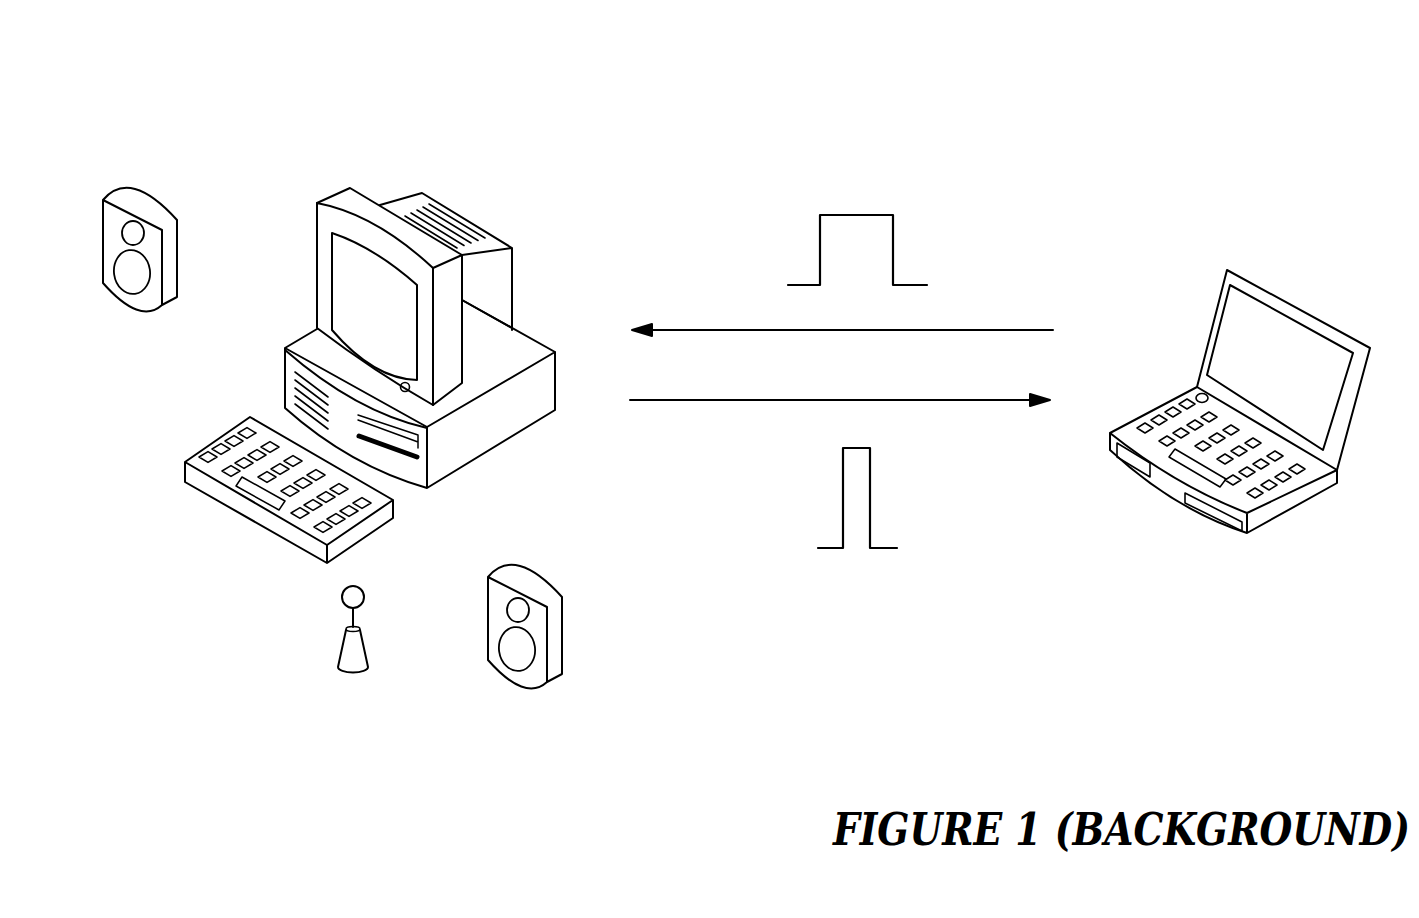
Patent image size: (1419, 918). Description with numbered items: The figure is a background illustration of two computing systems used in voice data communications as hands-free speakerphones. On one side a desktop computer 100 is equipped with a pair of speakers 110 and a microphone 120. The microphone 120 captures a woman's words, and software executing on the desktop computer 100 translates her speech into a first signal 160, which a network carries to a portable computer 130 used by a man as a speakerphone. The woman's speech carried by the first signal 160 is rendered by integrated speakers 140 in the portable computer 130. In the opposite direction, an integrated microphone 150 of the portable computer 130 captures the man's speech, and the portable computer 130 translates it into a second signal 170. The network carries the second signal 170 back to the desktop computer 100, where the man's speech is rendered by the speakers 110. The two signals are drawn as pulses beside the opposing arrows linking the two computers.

The desktop computer 100 is at (440, 204).
The speakers 110 is at (170, 202).
The microphone 120 is at (363, 630).
The portable computer 130 is at (1315, 312).
The integrated speakers 140 is at (1193, 505).
The integrated microphone 150 is at (1196, 396).
The first signal 160 is at (896, 514).
The second signal 170 is at (922, 230).